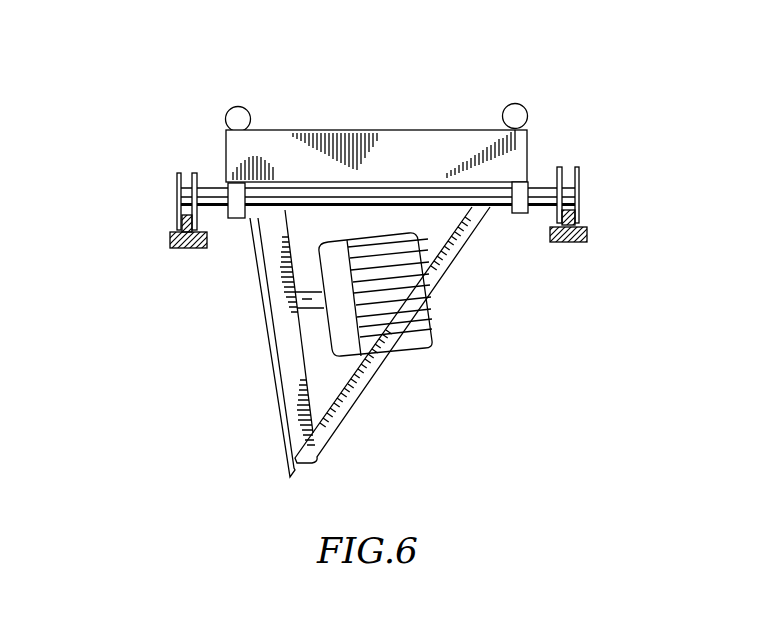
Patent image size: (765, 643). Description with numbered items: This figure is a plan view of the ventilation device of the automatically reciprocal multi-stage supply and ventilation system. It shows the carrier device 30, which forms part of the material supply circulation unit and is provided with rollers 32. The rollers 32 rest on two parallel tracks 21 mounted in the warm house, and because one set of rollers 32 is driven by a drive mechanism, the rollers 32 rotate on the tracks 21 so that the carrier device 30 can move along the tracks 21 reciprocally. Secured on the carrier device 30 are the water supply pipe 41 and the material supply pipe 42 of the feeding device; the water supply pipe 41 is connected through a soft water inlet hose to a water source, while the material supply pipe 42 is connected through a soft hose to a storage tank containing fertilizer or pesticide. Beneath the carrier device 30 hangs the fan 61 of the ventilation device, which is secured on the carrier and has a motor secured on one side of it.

The tracks 21 is at (168, 237).
The carrier device 30 is at (542, 141).
The rollers 32 is at (188, 192).
The water supply pipe 41 is at (235, 113).
The material supply pipe 42 is at (512, 108).
The fan 61 is at (433, 326).